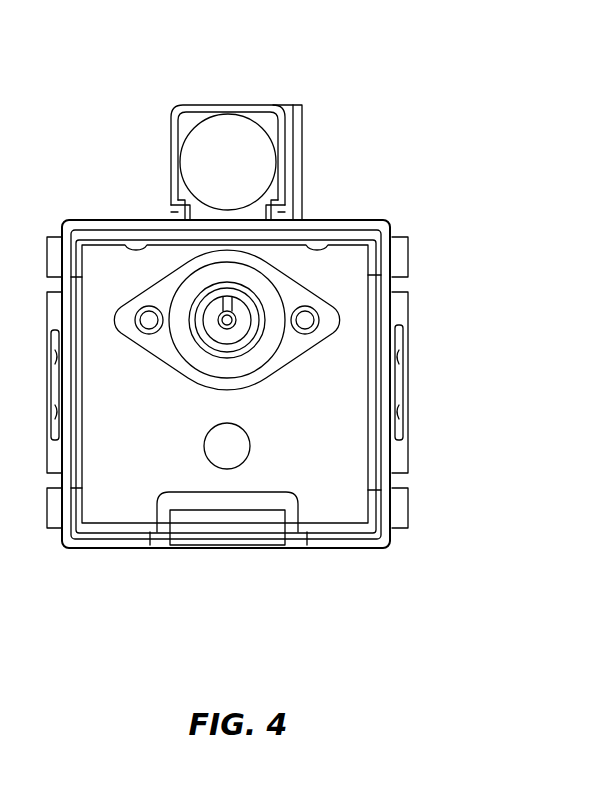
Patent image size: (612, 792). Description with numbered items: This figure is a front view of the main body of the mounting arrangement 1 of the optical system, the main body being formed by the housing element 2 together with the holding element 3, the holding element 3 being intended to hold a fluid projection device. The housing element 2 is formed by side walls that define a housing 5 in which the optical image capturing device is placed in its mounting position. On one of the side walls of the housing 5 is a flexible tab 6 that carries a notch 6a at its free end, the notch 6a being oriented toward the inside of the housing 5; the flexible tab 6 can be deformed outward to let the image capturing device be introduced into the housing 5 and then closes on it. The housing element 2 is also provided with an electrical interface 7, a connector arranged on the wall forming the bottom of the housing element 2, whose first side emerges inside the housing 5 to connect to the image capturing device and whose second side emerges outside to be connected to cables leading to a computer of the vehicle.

The mounting arrangement 1 is at (416, 196).
The housing element 2 is at (392, 548).
The holding element 3 is at (300, 104).
The housing 5 is at (128, 492).
The flexible tab 6 is at (257, 550).
The notch 6a is at (270, 525).
The electrical interface 7 is at (182, 293).